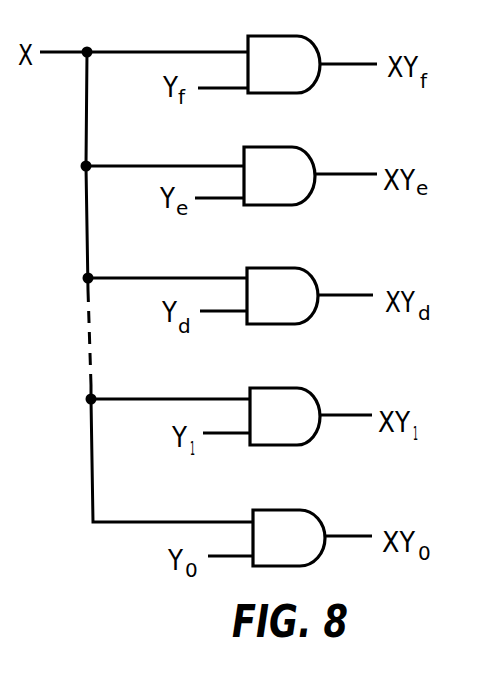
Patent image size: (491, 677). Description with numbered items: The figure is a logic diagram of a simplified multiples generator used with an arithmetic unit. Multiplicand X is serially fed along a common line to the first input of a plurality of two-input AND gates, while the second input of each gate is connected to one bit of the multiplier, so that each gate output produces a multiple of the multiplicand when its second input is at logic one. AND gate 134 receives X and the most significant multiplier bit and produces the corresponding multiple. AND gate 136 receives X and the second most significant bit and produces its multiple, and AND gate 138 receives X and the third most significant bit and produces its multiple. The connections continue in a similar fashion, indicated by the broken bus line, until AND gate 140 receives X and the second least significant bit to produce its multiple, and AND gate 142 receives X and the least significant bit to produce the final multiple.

The AND gate 134 is at (306, 36).
The AND gate 136 is at (297, 147).
The AND gate 138 is at (300, 268).
The AND gate 140 is at (300, 388).
The AND gate 142 is at (305, 510).